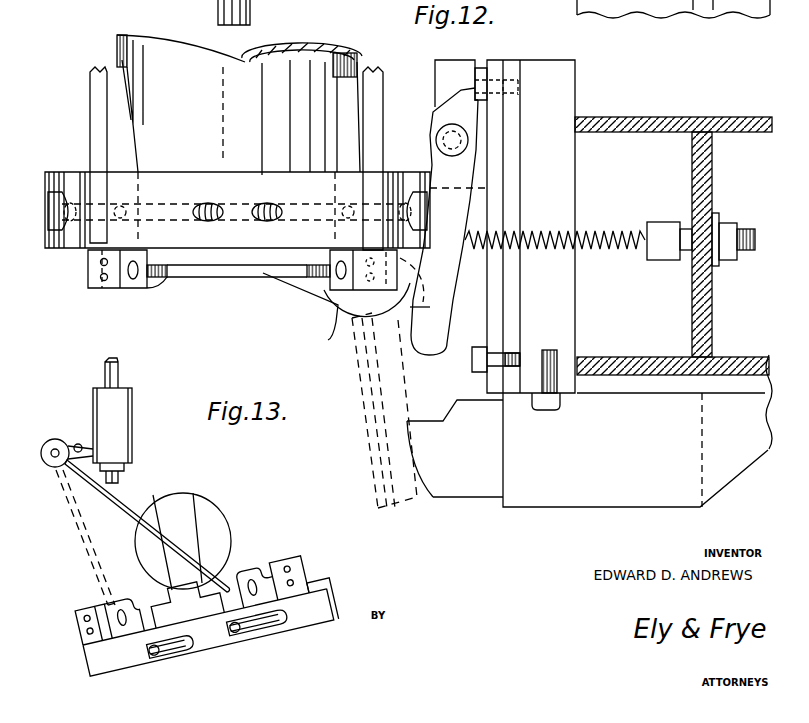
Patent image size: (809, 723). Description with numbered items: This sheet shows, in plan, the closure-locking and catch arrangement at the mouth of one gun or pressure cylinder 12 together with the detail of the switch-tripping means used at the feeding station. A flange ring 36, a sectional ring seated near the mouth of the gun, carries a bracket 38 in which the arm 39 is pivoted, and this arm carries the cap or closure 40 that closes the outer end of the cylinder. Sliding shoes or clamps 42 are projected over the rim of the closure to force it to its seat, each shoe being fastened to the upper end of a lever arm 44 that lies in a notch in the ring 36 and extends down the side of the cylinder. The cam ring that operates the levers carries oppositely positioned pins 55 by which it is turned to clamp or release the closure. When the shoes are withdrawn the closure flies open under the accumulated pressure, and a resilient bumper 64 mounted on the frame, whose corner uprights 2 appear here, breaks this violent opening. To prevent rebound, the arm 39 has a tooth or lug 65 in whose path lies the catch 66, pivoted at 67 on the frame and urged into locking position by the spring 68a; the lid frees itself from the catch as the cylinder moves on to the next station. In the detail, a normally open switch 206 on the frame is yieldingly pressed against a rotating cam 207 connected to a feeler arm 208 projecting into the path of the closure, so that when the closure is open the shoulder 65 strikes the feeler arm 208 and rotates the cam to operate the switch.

In FIG. 12, the corner uprights 2 is at (652, 8).
In FIG. 12, the gun or pressure cylinder 12 is at (360, 60).
In FIG. 12, the flange ring 36 is at (227, 238).
In FIG. 12, the bracket 38 is at (108, 172).
In FIG. 12, the arm 39 is at (263, 273).
In FIG. 13, the arm 39 is at (193, 530).
In FIG. 12, the cap or closure 40 is at (237, 262).
In FIG. 13, the cap or closure 40 is at (213, 505).
In FIG. 13, the sliding shoes or clamps 42 is at (292, 560).
In FIG. 12, the lever arm 44 is at (124, 118).
In FIG. 12, the pins 55 is at (250, 13).
In FIG. 12, the resilient bumper 64 is at (465, 490).
In FIG. 12, the tooth or lug 65 is at (328, 340).
In FIG. 13, the tooth or lug 65 is at (215, 600).
In FIG. 12, the catch 66 is at (453, 297).
In FIG. 12, the pivot 67 is at (435, 130).
In FIG. 12, the spring 68a is at (608, 235).
In FIG. 13, the normally open switch 206 is at (125, 421).
In FIG. 13, the rotating cam 207 is at (56, 438).
In FIG. 13, the feeler arm 208 is at (135, 515).